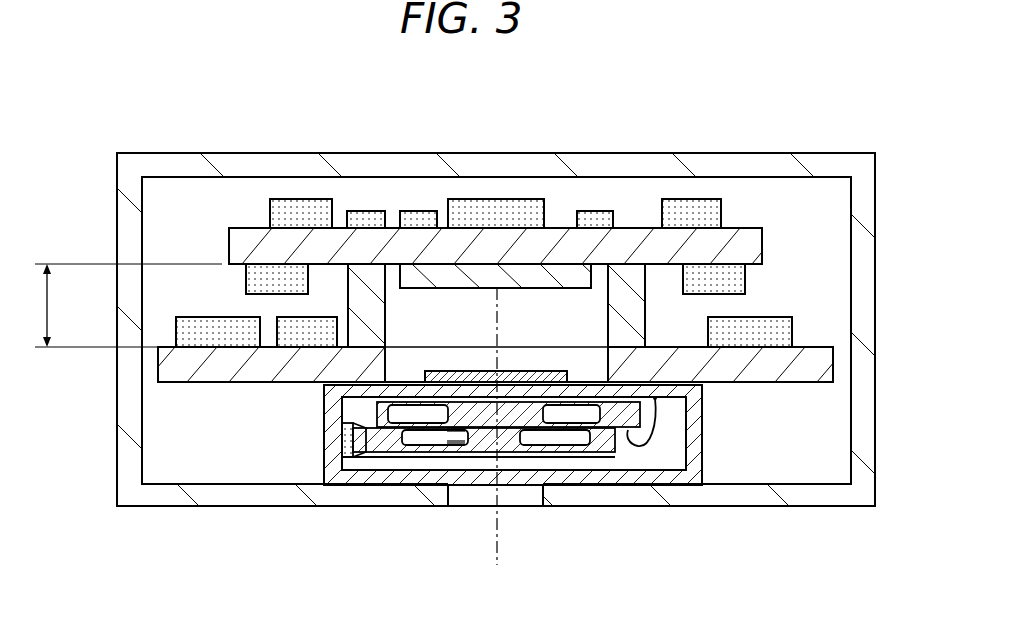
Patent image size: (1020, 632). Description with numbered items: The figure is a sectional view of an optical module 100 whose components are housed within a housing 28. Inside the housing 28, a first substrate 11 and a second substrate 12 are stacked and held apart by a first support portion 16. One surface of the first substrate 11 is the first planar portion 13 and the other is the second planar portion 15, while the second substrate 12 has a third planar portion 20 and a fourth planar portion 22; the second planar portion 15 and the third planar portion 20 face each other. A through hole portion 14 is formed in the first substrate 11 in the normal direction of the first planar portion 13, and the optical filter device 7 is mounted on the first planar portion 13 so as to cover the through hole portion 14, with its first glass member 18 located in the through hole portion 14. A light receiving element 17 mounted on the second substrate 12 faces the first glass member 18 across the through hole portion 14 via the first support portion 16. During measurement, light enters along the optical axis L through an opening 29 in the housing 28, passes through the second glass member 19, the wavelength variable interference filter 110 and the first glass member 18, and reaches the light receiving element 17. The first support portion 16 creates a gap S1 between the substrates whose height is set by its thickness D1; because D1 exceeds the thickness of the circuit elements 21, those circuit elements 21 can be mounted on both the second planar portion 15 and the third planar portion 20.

The optical module 100 is at (872, 111).
The optical filter device 7 is at (303, 433).
The first substrate 11 is at (165, 363).
The second substrate 12 is at (235, 243).
The first planar portion 13 is at (167, 387).
The through hole portion 14 is at (582, 360).
The second planar portion 15 is at (173, 340).
The first support portion 16 is at (386, 313).
The light receiving element 17 is at (517, 290).
The first glass member 18 is at (483, 371).
The second glass member 19 is at (324, 469).
The third planar portion 20 is at (247, 267).
The circuit elements 21 is at (598, 211).
The fourth planar portion 22 is at (241, 218).
The housing 28 is at (285, 493).
The opening 29 is at (465, 493).
The wavelength variable interference filter 110 is at (620, 458).
The gap S1 is at (674, 324).
The thickness D1 is at (113, 305).
The optical axis L is at (498, 541).